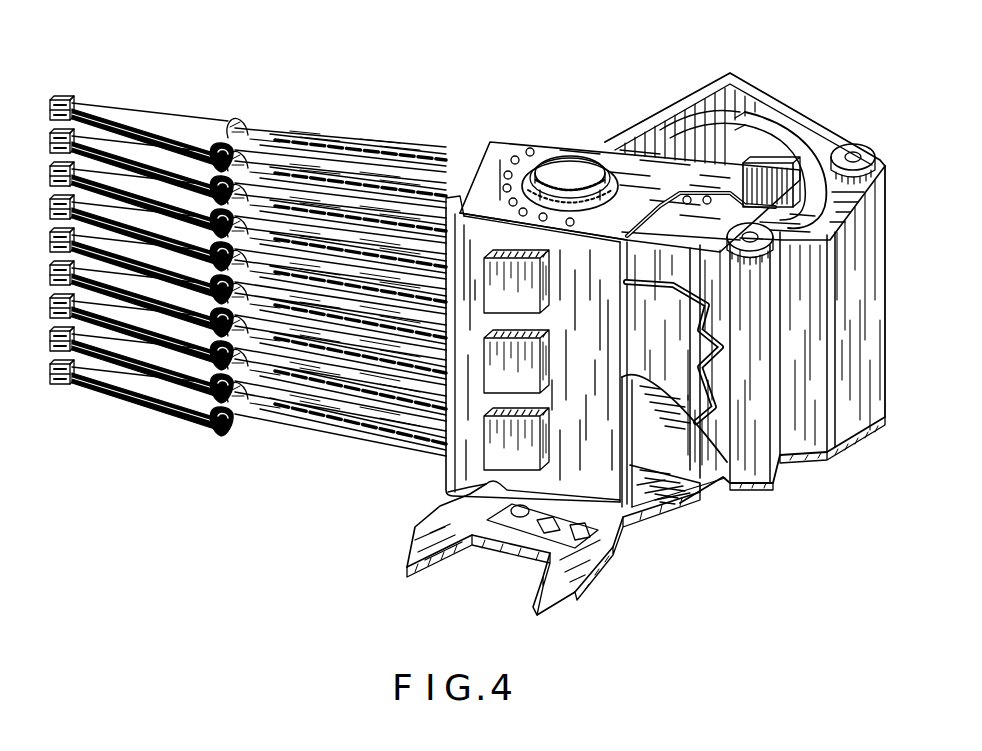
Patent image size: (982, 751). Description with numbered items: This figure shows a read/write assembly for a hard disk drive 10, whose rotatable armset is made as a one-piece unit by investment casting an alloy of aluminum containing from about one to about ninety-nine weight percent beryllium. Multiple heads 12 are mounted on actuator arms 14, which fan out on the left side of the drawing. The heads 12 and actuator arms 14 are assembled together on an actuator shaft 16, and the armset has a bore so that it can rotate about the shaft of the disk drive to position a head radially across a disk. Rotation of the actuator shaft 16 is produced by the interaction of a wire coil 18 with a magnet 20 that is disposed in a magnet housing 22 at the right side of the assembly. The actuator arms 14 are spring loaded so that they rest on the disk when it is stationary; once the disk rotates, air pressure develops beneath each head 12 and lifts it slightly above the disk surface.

The read/write assembly for hard disk drive 10 is at (541, 86).
The heads 12 is at (62, 98).
The actuator arms 14 is at (257, 140).
The actuator shaft 16 is at (570, 176).
The wire coil 18 is at (778, 136).
The magnet 20 is at (801, 160).
The magnet housing 22 is at (858, 418).